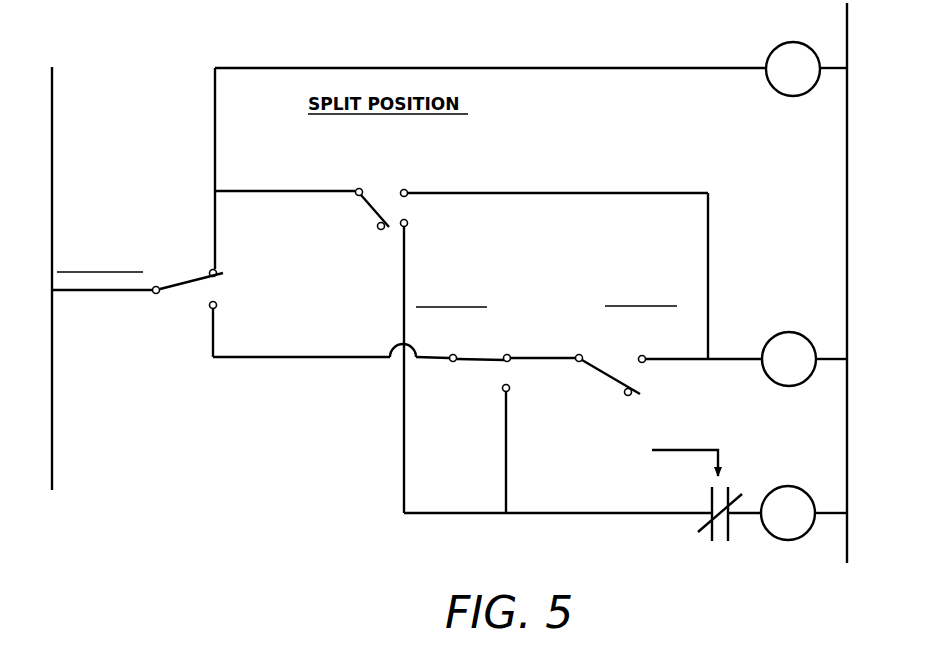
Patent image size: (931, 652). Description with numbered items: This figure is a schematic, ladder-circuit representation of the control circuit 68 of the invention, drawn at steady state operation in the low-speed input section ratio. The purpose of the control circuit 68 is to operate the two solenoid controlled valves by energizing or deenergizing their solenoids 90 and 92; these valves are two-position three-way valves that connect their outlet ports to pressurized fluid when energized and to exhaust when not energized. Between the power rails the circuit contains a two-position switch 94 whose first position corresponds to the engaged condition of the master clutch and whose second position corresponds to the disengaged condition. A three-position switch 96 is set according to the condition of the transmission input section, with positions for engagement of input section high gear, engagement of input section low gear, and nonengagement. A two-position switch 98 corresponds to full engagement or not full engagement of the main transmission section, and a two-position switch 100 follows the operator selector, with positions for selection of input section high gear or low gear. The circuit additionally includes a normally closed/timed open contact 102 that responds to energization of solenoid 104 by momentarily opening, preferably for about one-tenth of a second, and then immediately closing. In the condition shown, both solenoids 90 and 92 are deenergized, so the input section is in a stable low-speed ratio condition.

The control circuit 68 is at (213, 486).
The solenoid 90 is at (808, 340).
The solenoid 92 is at (806, 490).
The two-position switch 94 is at (165, 315).
The three-position switch 96 is at (323, 170).
The two-position switch 98 is at (481, 420).
The two-position switch 100 is at (725, 325).
The normally closed/timed open contact 102 is at (676, 540).
The solenoid 104 is at (780, 46).